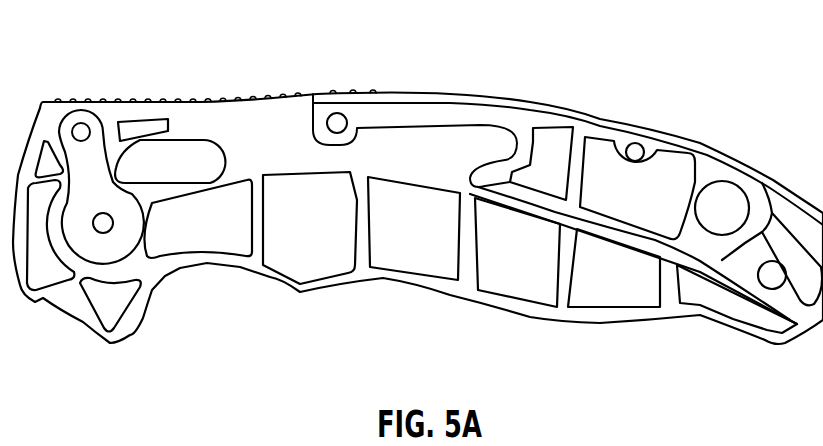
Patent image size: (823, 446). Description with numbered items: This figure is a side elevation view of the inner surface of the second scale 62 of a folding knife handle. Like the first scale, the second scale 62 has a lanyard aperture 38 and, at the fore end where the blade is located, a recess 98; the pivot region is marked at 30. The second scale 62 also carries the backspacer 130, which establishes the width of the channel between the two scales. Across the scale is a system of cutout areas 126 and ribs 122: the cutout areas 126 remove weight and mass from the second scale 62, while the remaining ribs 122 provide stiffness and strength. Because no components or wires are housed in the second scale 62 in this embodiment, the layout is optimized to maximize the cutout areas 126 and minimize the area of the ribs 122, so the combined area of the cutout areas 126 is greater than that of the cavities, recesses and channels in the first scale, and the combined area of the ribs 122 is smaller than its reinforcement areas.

The second scale 62 is at (723, 52).
The backspacer 130 is at (443, 112).
The recess 98 is at (122, 238).
The pivot 30 is at (104, 232).
The ribs 122 is at (260, 212).
The cutout areas 126 is at (328, 212).
The lanyard aperture 38 is at (720, 208).